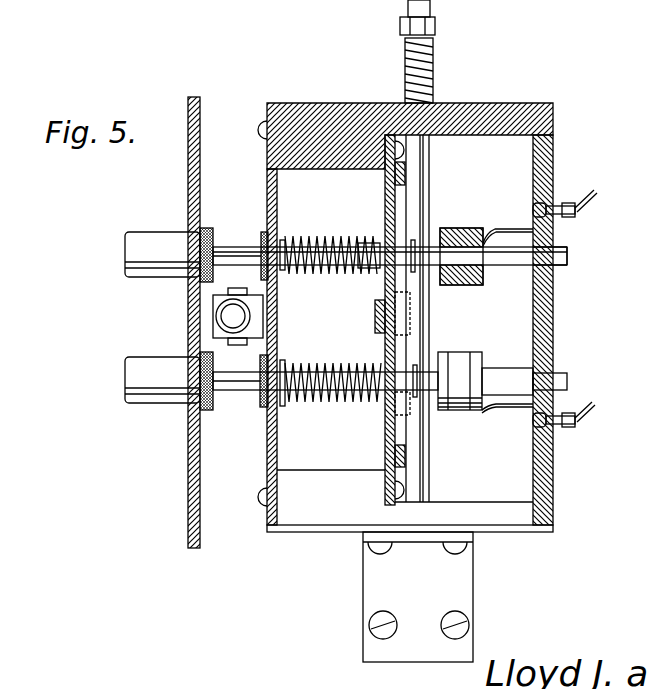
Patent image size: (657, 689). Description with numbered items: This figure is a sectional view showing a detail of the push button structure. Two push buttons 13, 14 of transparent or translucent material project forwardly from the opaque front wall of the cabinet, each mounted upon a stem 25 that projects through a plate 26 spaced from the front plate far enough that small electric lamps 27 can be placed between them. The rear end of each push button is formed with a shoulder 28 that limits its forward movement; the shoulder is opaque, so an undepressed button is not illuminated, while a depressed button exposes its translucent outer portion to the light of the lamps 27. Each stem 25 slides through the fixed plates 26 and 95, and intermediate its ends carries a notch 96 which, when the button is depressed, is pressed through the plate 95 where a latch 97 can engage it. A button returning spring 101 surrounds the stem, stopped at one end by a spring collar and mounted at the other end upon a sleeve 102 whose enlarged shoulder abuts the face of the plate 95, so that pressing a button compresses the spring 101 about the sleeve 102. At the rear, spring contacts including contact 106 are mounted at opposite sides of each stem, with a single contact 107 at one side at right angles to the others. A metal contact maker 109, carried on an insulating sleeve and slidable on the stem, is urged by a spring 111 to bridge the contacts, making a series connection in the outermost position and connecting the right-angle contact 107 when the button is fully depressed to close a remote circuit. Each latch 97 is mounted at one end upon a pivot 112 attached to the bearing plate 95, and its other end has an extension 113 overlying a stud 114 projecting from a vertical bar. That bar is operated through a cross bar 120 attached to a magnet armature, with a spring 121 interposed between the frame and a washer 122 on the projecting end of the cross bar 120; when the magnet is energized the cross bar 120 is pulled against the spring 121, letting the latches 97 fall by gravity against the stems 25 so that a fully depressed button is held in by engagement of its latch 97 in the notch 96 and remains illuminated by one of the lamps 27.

The push button 13 is at (130, 256).
The push button 14 is at (130, 384).
The stem 25 is at (236, 240).
The plate 26 is at (268, 175).
The electric lamp 27 is at (216, 316).
The shoulder 28 is at (205, 230).
The plate 95 is at (387, 193).
The notch 96 is at (367, 258).
The latch 97 is at (393, 213).
The button returning spring 101 is at (312, 242).
The sleeve 102 is at (337, 252).
The spring contact 106 is at (478, 372).
The contact 107 is at (484, 225).
The contact maker 109 is at (460, 282).
The spring 111 is at (505, 248).
The pivot 112 is at (400, 172).
The extension 113 is at (397, 285).
The stud 114 is at (380, 330).
The cross bar 120 is at (425, 158).
The spring 121 is at (432, 70).
The washer 122 is at (400, 26).